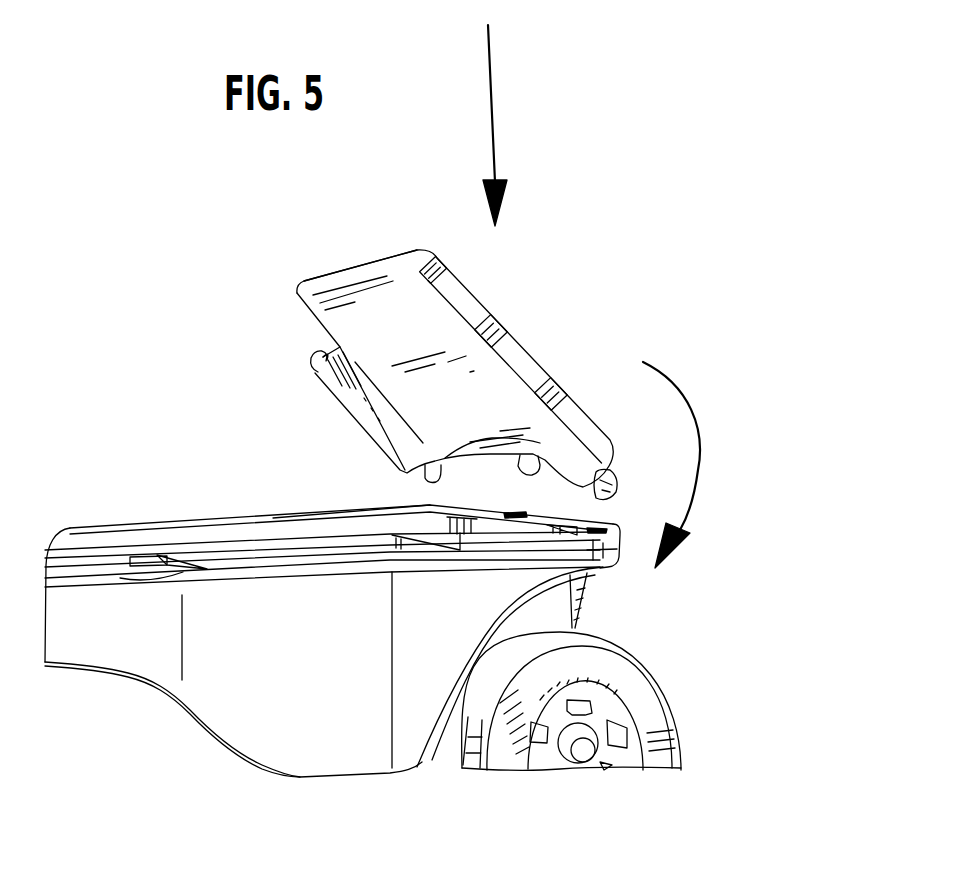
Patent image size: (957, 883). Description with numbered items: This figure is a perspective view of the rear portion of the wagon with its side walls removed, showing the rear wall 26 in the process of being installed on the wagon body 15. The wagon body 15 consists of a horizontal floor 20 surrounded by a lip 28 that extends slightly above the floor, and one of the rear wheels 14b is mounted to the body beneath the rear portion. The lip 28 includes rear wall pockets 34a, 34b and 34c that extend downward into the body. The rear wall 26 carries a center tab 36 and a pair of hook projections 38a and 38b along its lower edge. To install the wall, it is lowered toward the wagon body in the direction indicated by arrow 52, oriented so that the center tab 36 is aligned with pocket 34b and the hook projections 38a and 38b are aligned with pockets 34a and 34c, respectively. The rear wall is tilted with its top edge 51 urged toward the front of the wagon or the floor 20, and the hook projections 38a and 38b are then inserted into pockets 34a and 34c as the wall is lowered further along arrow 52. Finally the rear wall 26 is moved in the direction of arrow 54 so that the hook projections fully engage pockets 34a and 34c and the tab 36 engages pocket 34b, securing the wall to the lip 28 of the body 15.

The wagon body 15 is at (371, 590).
The horizontal floor 20 is at (130, 562).
The lip 28 is at (120, 527).
The rear wall 26 is at (478, 327).
The rear wall pocket 34a is at (613, 522).
The rear wall pocket 34b is at (519, 511).
The rear wall pocket 34c is at (427, 507).
The center tab 36 is at (513, 467).
The hook projection 38a is at (618, 485).
The hook projection 38b is at (425, 480).
The top edge 51 is at (352, 262).
The arrow 52 is at (493, 107).
The arrow 54 is at (697, 418).
The rear wheel 14b is at (683, 725).